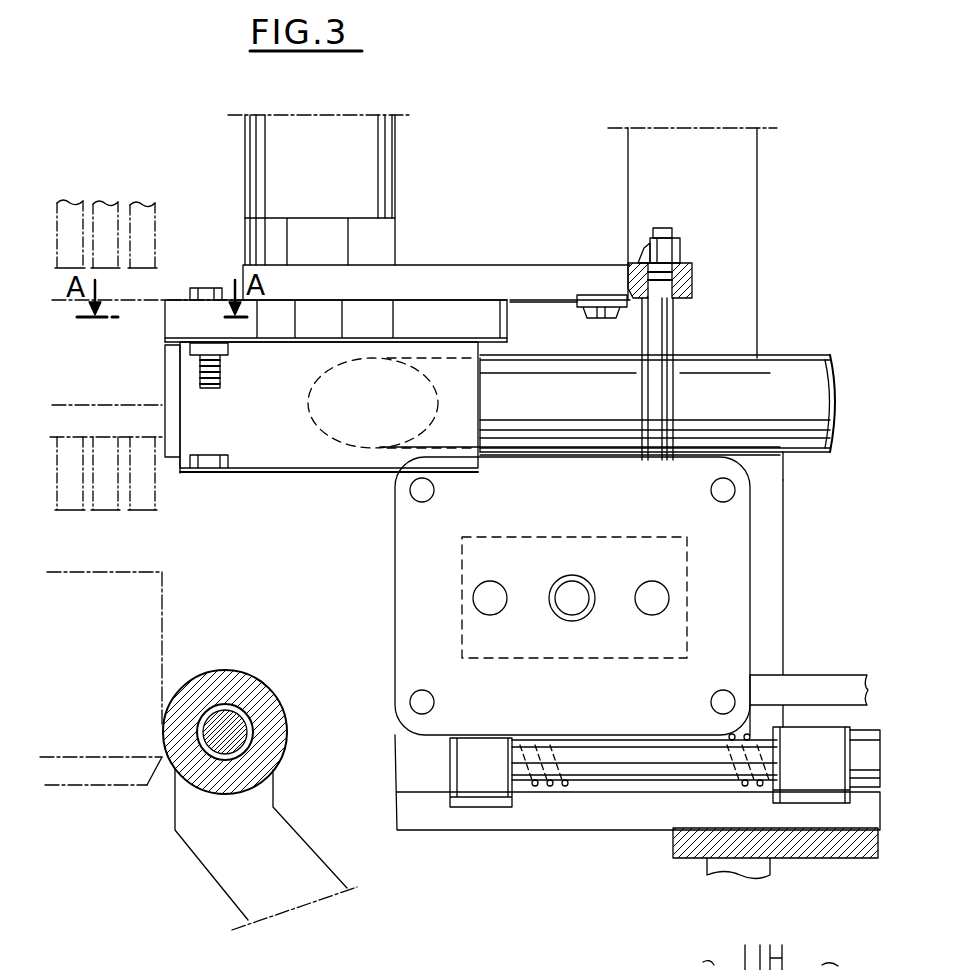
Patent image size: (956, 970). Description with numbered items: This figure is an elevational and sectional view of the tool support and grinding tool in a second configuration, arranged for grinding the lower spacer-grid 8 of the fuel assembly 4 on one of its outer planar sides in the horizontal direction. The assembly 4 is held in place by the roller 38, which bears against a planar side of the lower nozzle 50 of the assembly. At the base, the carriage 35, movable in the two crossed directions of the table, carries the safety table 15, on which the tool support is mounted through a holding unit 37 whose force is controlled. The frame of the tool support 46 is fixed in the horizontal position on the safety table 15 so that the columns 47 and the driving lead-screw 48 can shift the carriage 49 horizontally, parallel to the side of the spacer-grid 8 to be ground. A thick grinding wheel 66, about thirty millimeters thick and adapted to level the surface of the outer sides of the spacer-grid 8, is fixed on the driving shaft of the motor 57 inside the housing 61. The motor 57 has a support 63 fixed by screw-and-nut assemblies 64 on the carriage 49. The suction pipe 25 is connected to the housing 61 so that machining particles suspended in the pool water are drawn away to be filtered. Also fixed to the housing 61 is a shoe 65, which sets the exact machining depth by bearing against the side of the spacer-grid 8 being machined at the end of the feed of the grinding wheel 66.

The fuel assembly 4 is at (106, 232).
The lower spacer-grid 8 is at (126, 300).
The shoe 65 is at (207, 317).
The motor 57 is at (362, 192).
The support 63 is at (492, 285).
The screw-and-nut assemblies 64 is at (650, 232).
The suction pipe 25 is at (775, 387).
The grinding wheel 66 is at (173, 442).
The housing 61 is at (247, 450).
The frame of the tool support 46 is at (733, 587).
The carriage 49 is at (690, 553).
The columns 47 is at (483, 595).
The driving lead-screw 48 is at (567, 600).
The lower nozzle 50 is at (133, 637).
The roller 38 is at (267, 697).
The safety table 15 is at (787, 697).
The holding unit 37 is at (880, 700).
The carriage 35 is at (807, 840).